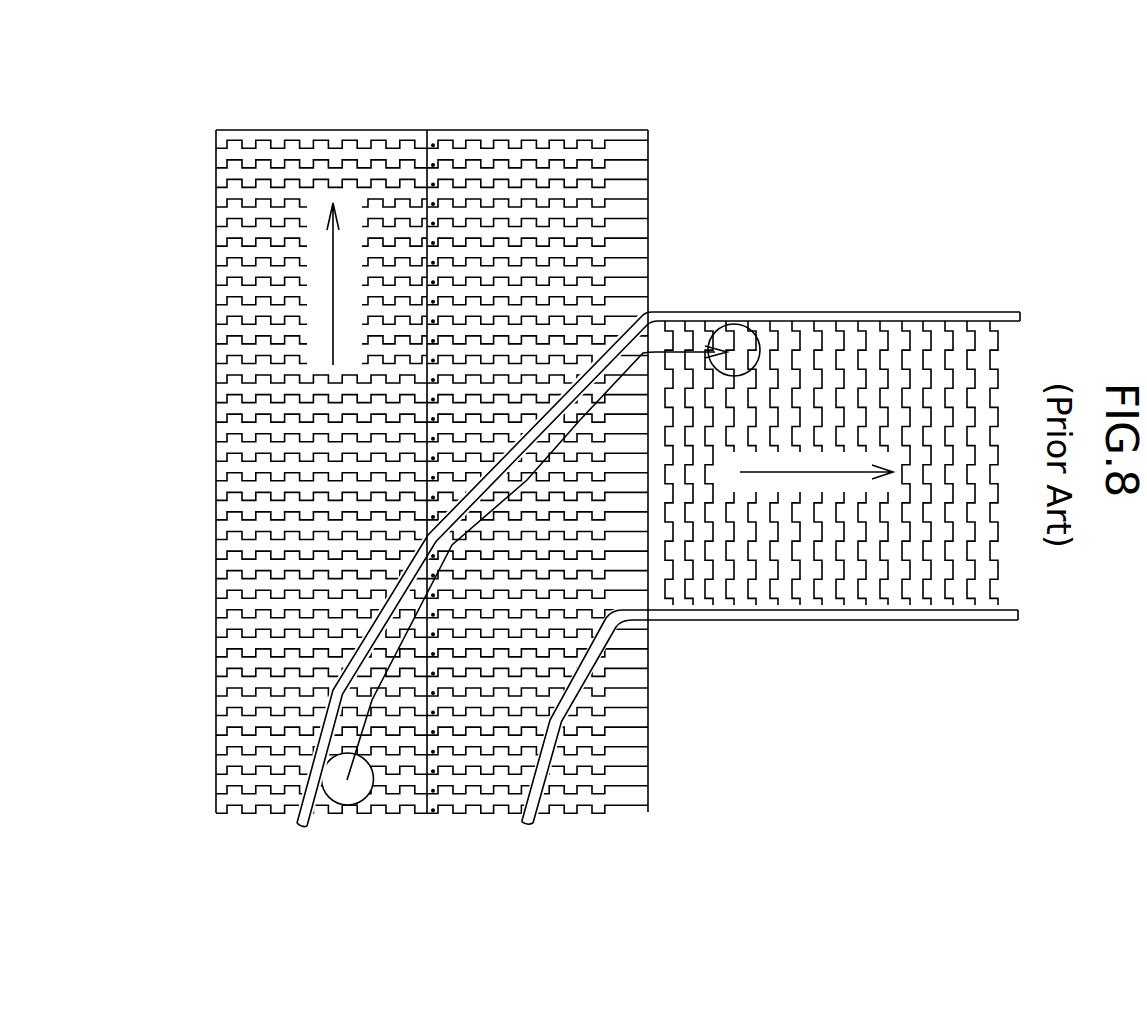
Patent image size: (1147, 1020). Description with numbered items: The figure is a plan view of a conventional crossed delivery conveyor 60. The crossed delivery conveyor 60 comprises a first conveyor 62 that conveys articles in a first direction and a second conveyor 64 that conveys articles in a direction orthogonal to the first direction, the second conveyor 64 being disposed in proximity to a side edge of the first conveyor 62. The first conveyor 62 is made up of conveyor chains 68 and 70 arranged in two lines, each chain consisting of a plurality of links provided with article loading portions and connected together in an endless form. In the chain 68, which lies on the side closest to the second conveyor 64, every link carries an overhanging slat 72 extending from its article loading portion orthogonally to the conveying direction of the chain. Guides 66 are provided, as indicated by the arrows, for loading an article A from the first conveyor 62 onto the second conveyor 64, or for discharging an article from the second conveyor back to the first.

The crossed delivery conveyor 60 is at (566, 469).
The first conveyor 62 is at (566, 469).
The second conveyor 64 is at (948, 621).
The guides 66 is at (300, 826).
The conveyor chain 68 is at (520, 129).
The conveyor chain 70 is at (315, 125).
The overhanging slat 72 is at (648, 189).
The article A is at (732, 331).